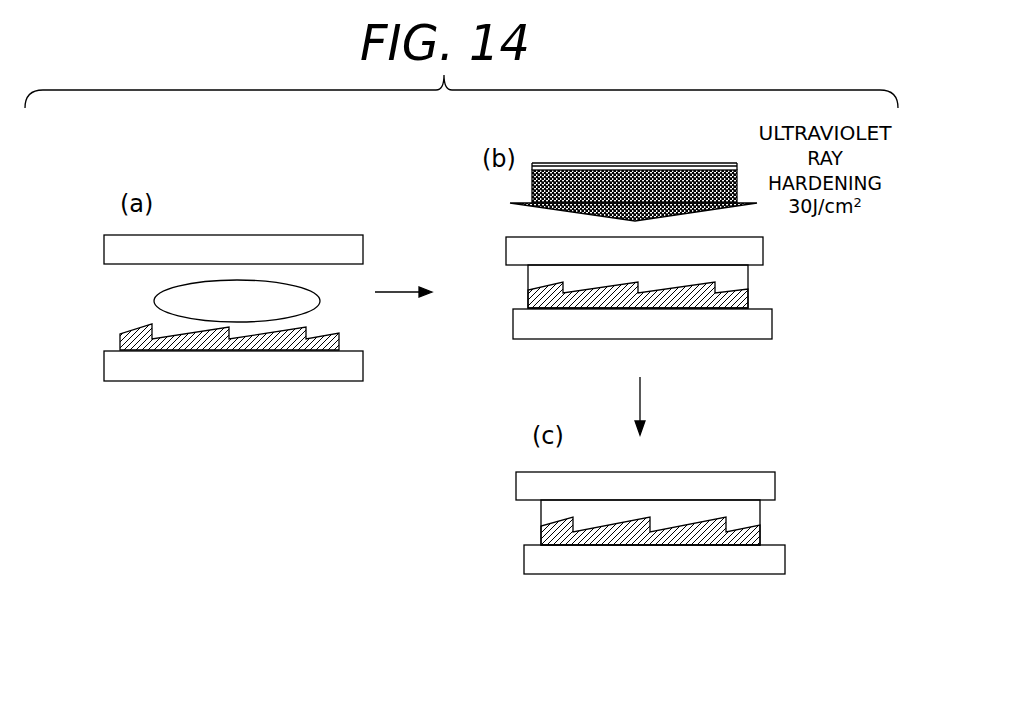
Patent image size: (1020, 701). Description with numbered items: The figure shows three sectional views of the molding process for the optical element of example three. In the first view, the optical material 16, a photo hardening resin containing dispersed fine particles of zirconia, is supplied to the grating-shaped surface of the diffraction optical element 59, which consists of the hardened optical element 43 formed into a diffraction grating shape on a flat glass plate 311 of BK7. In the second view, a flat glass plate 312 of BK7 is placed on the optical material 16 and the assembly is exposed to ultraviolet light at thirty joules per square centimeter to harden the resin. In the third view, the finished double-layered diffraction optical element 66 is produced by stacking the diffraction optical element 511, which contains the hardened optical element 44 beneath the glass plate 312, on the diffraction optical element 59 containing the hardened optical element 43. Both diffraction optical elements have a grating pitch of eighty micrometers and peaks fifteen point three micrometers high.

The flat glass plate 312 is at (304, 242).
The optical material 16 is at (165, 292).
The hardened optical element 43 is at (113, 310).
The diffraction optical element 59 is at (73, 310).
The flat glass plate 311 is at (286, 376).
The hardened optical element 44 is at (752, 250).
The diffraction optical element 511 is at (795, 228).
The double-layered diffraction optical element 66 is at (857, 455).